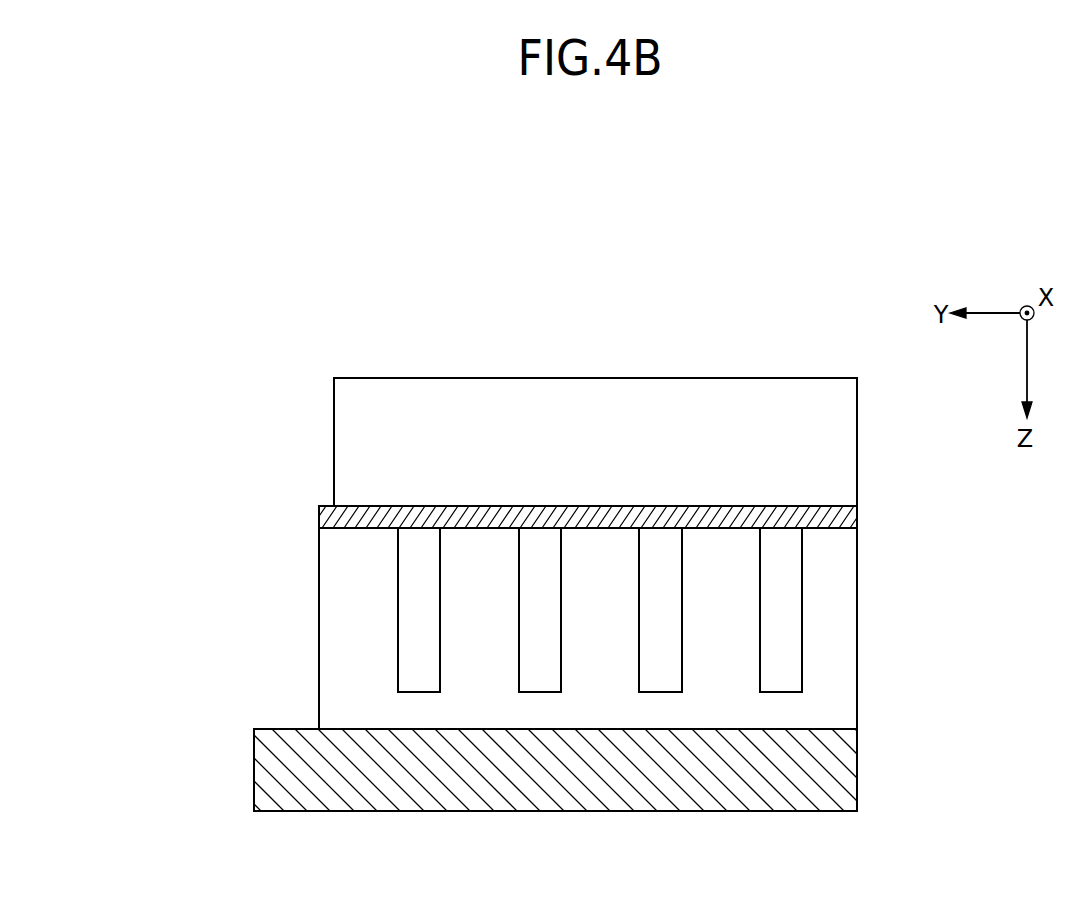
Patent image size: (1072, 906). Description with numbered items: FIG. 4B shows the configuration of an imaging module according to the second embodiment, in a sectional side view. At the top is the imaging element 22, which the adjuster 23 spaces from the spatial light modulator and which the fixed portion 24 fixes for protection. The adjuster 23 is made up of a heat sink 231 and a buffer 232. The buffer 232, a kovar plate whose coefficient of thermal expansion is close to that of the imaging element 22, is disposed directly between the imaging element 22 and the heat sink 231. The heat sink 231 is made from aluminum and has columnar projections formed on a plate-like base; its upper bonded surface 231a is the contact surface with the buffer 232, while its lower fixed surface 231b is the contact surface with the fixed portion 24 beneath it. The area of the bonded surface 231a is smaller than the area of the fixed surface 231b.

The imaging element 22 is at (583, 449).
The adjuster 23 is at (258, 577).
The heat sink 231 is at (319, 628).
The bonded surface 231a is at (822, 530).
The fixed surface 231b is at (838, 729).
The buffer 232 is at (857, 521).
The fixed portion 24 is at (857, 772).